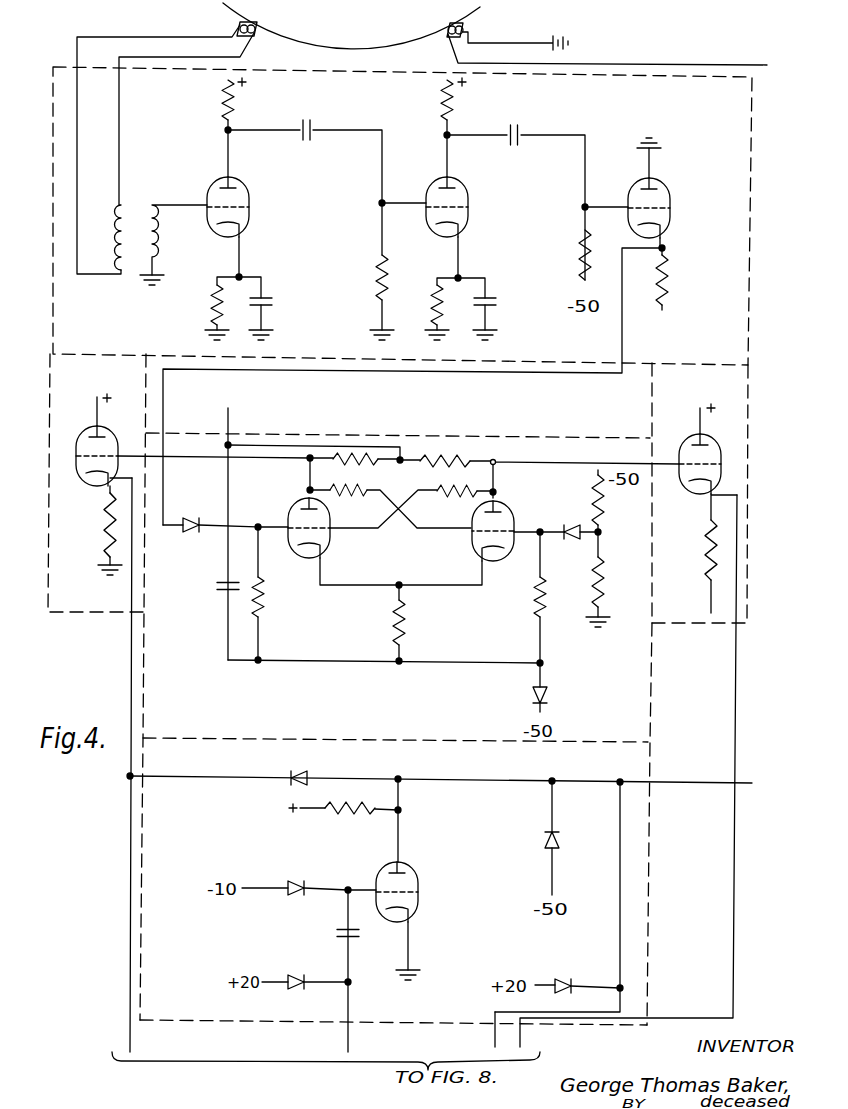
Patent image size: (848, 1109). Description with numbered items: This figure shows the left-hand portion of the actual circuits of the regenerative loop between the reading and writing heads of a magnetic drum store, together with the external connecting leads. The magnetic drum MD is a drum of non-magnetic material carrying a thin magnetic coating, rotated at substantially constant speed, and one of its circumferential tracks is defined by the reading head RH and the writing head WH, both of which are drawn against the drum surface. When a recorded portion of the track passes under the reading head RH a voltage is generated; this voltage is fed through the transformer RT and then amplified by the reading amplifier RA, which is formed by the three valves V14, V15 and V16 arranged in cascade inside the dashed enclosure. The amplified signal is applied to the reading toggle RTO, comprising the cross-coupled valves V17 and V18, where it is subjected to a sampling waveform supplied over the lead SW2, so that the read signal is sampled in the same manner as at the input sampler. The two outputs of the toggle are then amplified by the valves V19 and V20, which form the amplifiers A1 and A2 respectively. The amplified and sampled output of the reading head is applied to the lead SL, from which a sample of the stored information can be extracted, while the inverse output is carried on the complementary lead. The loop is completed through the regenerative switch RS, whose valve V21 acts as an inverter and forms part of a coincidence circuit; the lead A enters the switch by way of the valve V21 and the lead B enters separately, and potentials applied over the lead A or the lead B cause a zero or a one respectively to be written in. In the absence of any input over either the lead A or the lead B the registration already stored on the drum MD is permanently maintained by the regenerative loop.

The magnetic drum MD is at (351, 26).
The reading head RH is at (228, 27).
The writing head WH is at (607, 43).
The transformer RT is at (165, 155).
The reading amplifier RA is at (402, 216).
The valve V14 is at (228, 209).
The valve V15 is at (448, 209).
The valve V16 is at (420, 331).
The valve V17 is at (296, 523).
The valve V18 is at (510, 529).
The valve V19 is at (181, 484).
The valve V20 is at (698, 508).
The valve V21 is at (380, 891).
The amplifier A1 is at (97, 687).
The amplifier A2 is at (700, 493).
The lead SW2 is at (243, 531).
The reading toggle RTO is at (397, 729).
The regenerative switch RS is at (393, 970).
The lead SL is at (553, 1053).
The lead A is at (351, 971).
The lead B is at (484, 1032).